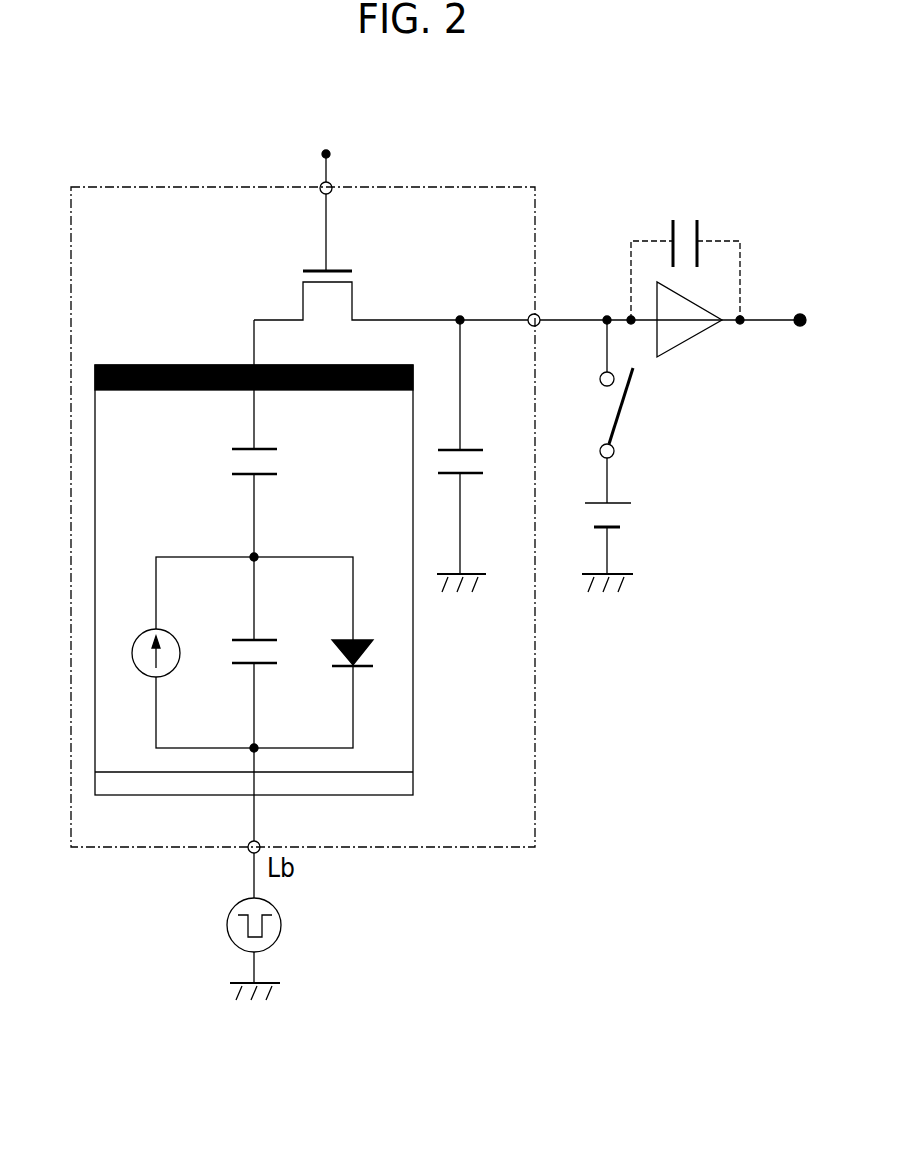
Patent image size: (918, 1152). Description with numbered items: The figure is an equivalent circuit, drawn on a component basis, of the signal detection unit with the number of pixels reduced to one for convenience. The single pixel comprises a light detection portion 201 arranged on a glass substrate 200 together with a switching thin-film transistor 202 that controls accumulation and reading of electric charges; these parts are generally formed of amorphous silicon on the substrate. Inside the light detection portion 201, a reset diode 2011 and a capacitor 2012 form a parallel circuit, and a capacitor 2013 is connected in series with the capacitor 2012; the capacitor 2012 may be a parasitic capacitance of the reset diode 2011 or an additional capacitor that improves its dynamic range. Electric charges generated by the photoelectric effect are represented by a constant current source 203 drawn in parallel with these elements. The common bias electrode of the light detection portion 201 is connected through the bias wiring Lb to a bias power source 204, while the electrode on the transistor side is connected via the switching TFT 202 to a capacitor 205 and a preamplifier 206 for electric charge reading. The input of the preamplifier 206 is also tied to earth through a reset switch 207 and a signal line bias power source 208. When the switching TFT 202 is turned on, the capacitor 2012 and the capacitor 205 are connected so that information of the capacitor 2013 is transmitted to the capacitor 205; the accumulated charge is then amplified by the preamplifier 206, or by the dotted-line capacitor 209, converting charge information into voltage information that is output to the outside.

The glass substrate 200 is at (536, 657).
The light detection portion 201 is at (125, 365).
The switching thin-film transistor 202 is at (352, 292).
The constant current source 203 is at (172, 672).
The bias power source 204 is at (281, 925).
The capacitor 205 is at (470, 450).
The preamplifier 206 is at (690, 337).
The reset switch 207 is at (624, 400).
The signal line bias power source 208 is at (628, 516).
The capacitor 209 is at (684, 222).
The reset diode 2011 is at (345, 640).
The capacitor 2012 is at (236, 637).
The capacitor 2013 is at (282, 464).